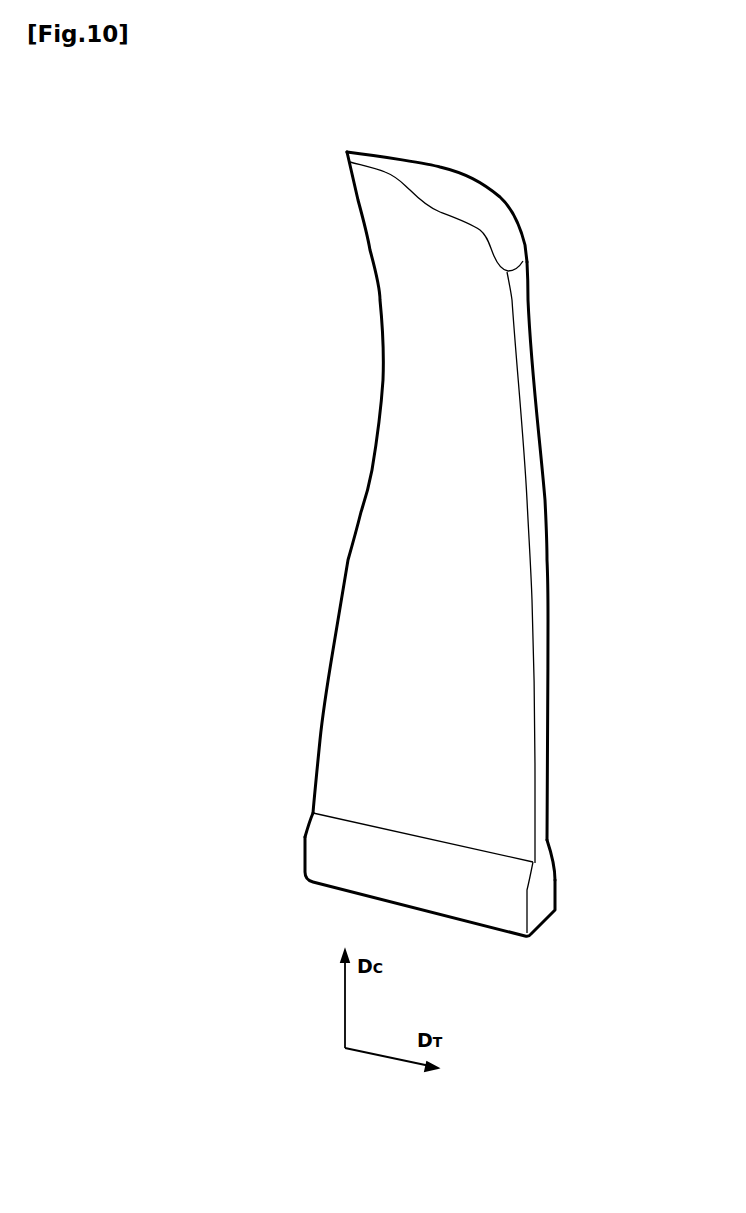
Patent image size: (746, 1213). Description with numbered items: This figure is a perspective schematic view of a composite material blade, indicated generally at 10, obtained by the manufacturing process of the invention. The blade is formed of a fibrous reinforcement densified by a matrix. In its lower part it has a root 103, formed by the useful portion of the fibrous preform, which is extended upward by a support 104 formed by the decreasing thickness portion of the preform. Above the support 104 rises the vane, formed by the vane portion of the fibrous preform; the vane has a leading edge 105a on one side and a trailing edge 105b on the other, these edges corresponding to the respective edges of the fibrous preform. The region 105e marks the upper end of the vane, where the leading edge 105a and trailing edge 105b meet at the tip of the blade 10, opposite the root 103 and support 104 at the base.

The blade 10 is at (470, 546).
The blade tip 105e is at (460, 204).
The trailing edge 105b is at (358, 513).
The leading edge 105a is at (543, 550).
The support 104 is at (543, 870).
The root 103 is at (543, 913).